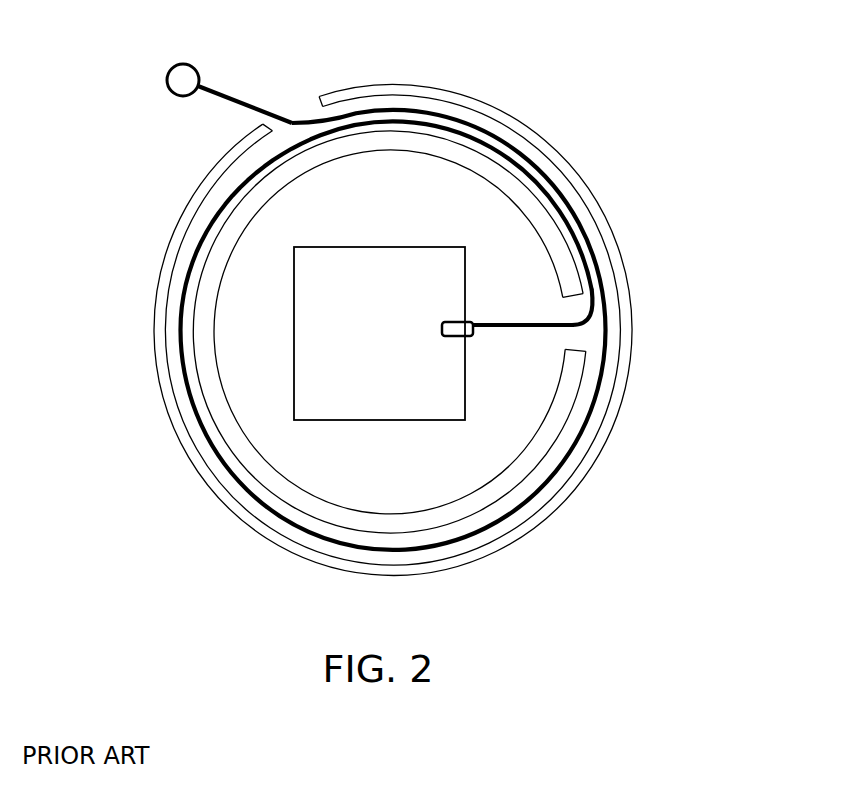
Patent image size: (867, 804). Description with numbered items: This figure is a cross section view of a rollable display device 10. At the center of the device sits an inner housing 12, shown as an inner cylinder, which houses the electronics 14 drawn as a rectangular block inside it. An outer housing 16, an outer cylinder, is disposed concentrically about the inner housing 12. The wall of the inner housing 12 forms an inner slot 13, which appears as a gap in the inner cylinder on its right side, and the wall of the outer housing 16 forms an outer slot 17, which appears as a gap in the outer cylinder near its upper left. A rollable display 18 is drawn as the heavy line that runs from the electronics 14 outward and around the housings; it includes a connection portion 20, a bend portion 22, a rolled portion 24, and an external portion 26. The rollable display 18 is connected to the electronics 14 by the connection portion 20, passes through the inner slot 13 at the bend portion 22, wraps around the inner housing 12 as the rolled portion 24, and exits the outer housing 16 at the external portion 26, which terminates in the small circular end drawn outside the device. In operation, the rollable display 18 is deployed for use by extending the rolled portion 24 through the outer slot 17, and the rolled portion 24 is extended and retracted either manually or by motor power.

The rollable display device 10 is at (620, 96).
The inner housing 12 is at (343, 520).
The inner slot 13 is at (576, 340).
The electronics 14 is at (312, 283).
The outer housing 16 is at (161, 394).
The outer slot 17 is at (308, 106).
The rollable display 18 is at (517, 510).
The connection portion 20 is at (474, 323).
The bend portion 22 is at (582, 322).
The rolled portion 24 is at (580, 210).
The external portion 26 is at (168, 86).